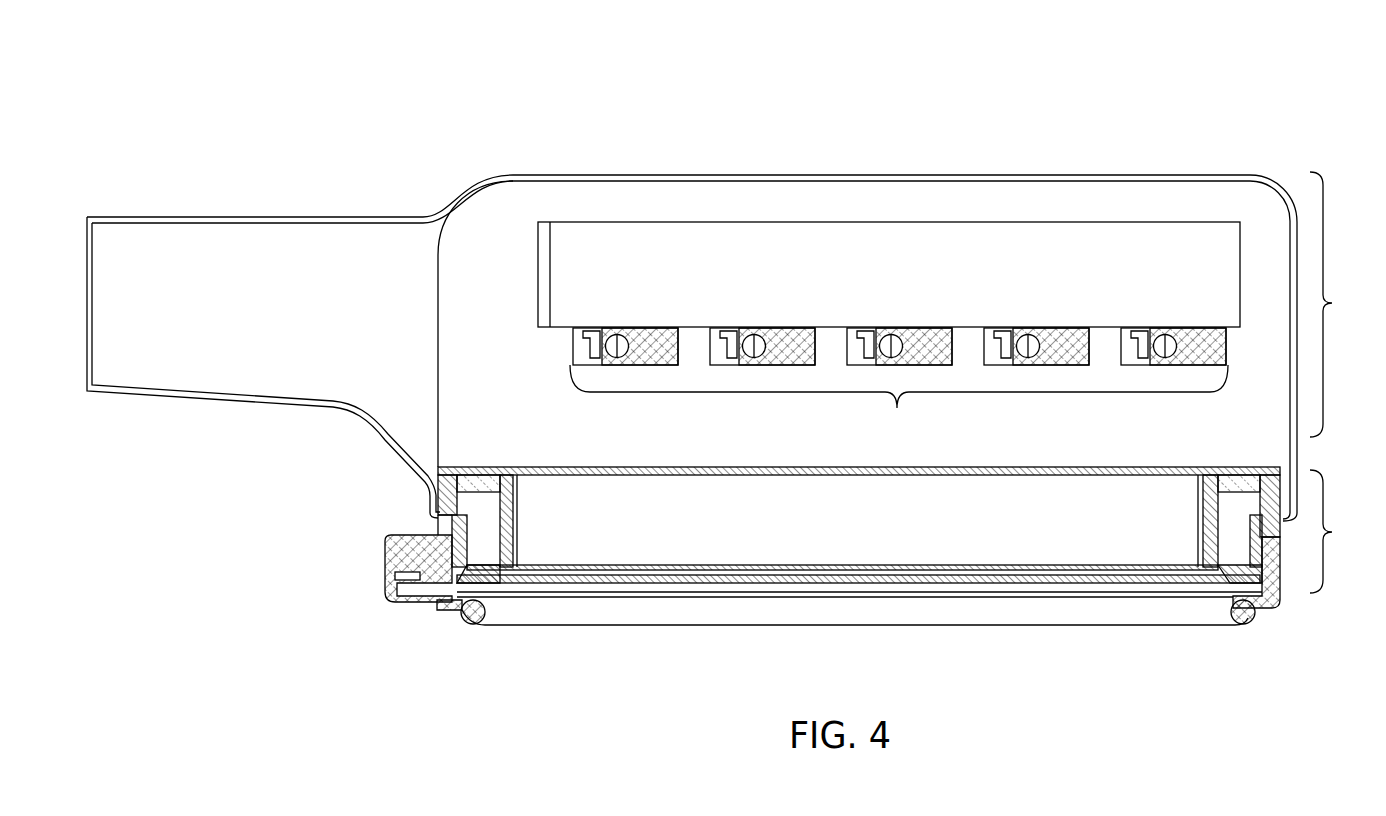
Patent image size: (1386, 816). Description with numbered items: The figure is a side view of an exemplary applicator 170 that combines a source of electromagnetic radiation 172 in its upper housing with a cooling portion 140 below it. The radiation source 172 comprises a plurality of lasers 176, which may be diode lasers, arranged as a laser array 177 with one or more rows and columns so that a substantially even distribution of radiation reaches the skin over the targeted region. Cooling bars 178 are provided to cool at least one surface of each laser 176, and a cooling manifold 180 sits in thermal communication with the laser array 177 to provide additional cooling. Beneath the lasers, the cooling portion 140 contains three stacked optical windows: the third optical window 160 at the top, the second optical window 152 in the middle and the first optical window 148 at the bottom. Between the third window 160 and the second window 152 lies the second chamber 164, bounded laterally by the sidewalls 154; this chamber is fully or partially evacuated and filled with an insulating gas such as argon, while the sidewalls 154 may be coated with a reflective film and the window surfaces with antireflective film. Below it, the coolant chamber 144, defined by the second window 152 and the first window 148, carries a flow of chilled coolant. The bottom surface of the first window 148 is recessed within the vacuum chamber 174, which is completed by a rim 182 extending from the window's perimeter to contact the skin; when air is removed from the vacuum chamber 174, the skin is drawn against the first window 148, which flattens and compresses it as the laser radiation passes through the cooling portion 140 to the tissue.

The applicator 170 is at (366, 118).
The source of electromagnetic radiation 172 is at (950, 308).
The cooling portion 140 is at (874, 543).
The cooling manifold 180 is at (587, 245).
The laser 176 is at (592, 337).
The cooling bar 178 is at (650, 345).
The laser array 177 is at (899, 365).
The third optical window 160 is at (557, 472).
The sidewall 154 is at (518, 520).
The coolant chamber 144 is at (522, 575).
The first optical window 148 is at (600, 580).
The second optical window 152 is at (648, 568).
The vacuum chamber 174 is at (935, 590).
The second chamber 164 is at (998, 538).
The rim 182 is at (1248, 622).